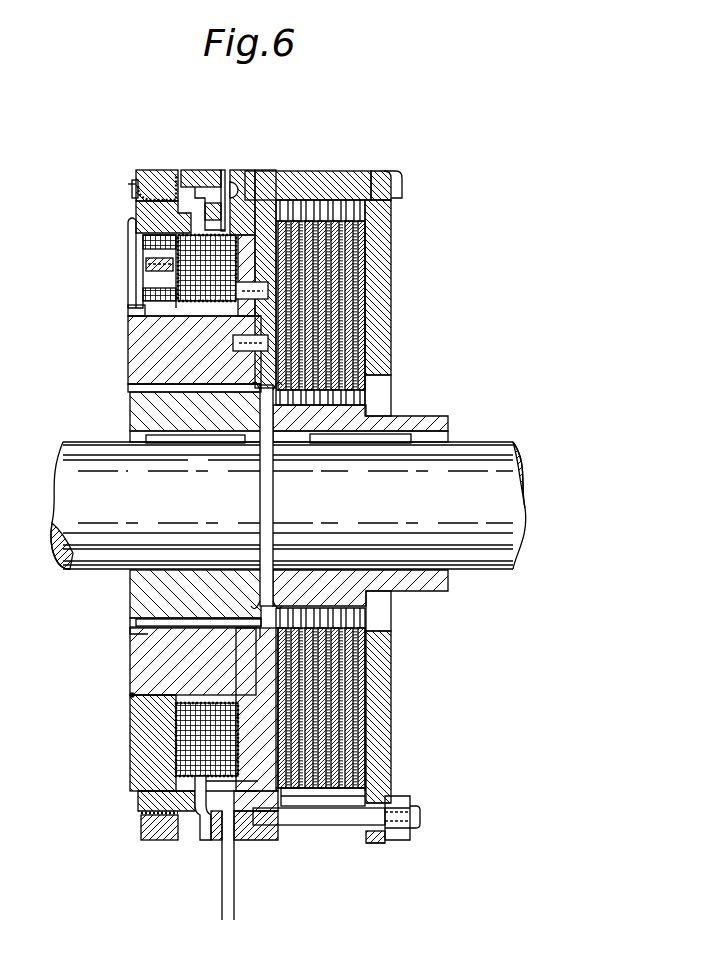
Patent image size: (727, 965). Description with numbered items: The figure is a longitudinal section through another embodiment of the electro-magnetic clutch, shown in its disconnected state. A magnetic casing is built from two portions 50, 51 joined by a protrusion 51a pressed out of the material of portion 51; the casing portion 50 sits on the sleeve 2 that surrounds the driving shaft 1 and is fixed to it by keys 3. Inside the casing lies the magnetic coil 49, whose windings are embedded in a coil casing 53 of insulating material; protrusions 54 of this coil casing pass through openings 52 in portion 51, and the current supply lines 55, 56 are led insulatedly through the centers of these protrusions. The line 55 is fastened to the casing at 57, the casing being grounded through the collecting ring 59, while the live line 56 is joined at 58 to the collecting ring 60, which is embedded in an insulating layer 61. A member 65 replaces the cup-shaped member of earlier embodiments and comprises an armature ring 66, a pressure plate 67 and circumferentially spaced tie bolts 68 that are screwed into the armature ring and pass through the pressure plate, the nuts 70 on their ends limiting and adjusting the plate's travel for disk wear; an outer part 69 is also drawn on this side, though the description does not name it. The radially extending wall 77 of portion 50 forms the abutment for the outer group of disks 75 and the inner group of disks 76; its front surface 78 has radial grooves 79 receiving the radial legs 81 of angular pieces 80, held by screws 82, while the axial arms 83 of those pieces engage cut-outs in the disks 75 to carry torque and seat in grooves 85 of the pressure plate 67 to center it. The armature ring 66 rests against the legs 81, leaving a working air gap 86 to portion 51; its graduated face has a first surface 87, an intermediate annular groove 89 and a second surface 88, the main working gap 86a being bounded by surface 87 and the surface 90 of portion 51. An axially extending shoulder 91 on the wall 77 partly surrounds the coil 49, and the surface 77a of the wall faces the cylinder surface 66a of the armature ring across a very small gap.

The shaft 1 is at (83, 446).
The sleeve 2 is at (140, 408).
The keys 3 is at (130, 616).
The magnetic coil 49 is at (207, 268).
The portion of the magnetic casing 50 is at (122, 362).
The portion of the magnetic casing 51 is at (130, 206).
The protrusion 51a is at (124, 687).
The openings 52 is at (126, 342).
The coil casing 53 is at (194, 313).
The protrusions 54 is at (136, 240).
The current supply line 55 is at (120, 306).
The live line 56 is at (121, 222).
The connection point 57 is at (132, 290).
The connection point 58 is at (129, 172).
The collecting ring 59 is at (190, 162).
The collecting ring 60 is at (135, 162).
The insulating layer 61 is at (164, 162).
The member 65 is at (390, 838).
The armature ring 66 is at (229, 162).
The cylinder surface 66a is at (240, 175).
The pressure plate 67 is at (380, 703).
The tie bolts 68 is at (322, 810).
The outer ring 69 is at (384, 190).
The nuts 70 is at (386, 792).
The group of disks 75 is at (352, 206).
The group of disks 76 is at (343, 265).
The radially extending wall 77 is at (257, 709).
The surface of the wall 77a is at (214, 200).
The surface of the wall 78 is at (283, 783).
The radially extending grooves 79 is at (251, 394).
The angular pieces 80 is at (330, 163).
The radial legs 81 is at (252, 343).
The screws 82 is at (247, 291).
The axially extending arms 83 is at (289, 163).
The axially extending grooves 85 is at (386, 163).
The working air gap 86 is at (250, 903).
The main working gap 86a is at (190, 784).
The first surface 87 is at (197, 830).
The second surface 88 is at (221, 812).
The intermediate annular groove 89 is at (234, 813).
The surface of the portion 51 90 is at (190, 827).
The axially extending shoulder 91 is at (207, 739).